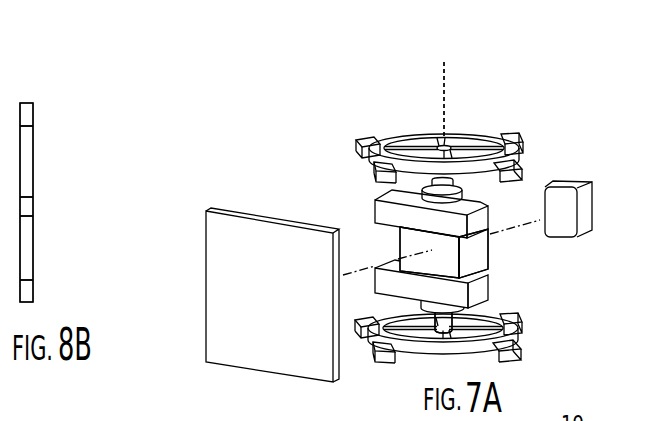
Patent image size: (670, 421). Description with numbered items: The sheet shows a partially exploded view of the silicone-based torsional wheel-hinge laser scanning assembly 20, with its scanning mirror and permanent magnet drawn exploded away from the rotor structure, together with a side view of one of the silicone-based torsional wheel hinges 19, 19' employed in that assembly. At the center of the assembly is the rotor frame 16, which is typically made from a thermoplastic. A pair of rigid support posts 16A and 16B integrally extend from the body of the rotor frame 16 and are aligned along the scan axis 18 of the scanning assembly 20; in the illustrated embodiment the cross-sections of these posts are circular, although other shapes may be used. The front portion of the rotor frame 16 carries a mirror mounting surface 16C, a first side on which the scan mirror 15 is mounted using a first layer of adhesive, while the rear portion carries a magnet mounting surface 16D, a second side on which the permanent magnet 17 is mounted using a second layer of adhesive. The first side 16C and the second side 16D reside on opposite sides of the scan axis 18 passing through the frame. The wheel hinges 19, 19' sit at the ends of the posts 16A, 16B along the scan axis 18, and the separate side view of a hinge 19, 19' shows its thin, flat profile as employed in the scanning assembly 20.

In FIG. 7A, the scanning mirror 15 is at (255, 357).
In FIG. 7A, the rotor frame 16 is at (477, 262).
In FIG. 7A, the rigid support post 16A is at (485, 197).
In FIG. 7A, the rigid support post 16B is at (463, 312).
In FIG. 7A, the mirror mounting surface 16C is at (412, 248).
In FIG. 7A, the magnet mounting surface 16D is at (487, 240).
In FIG. 7A, the permanent magnet 17 is at (587, 215).
In FIG. 7A, the scan axis 18 is at (452, 99).
In FIG. 8B, the silicone-based torsional wheel hinge 19 is at (74, 202).
In FIG. 7A, the silicone-based torsional wheel hinge 19 is at (473, 146).
In FIG. 8B, the silicone-based torsional wheel hinge 19' is at (26, 202).
In FIG. 7A, the silicone-based torsional wheel hinge 19' is at (483, 340).
In FIG. 7A, the laser scanning assembly 20 is at (357, 108).